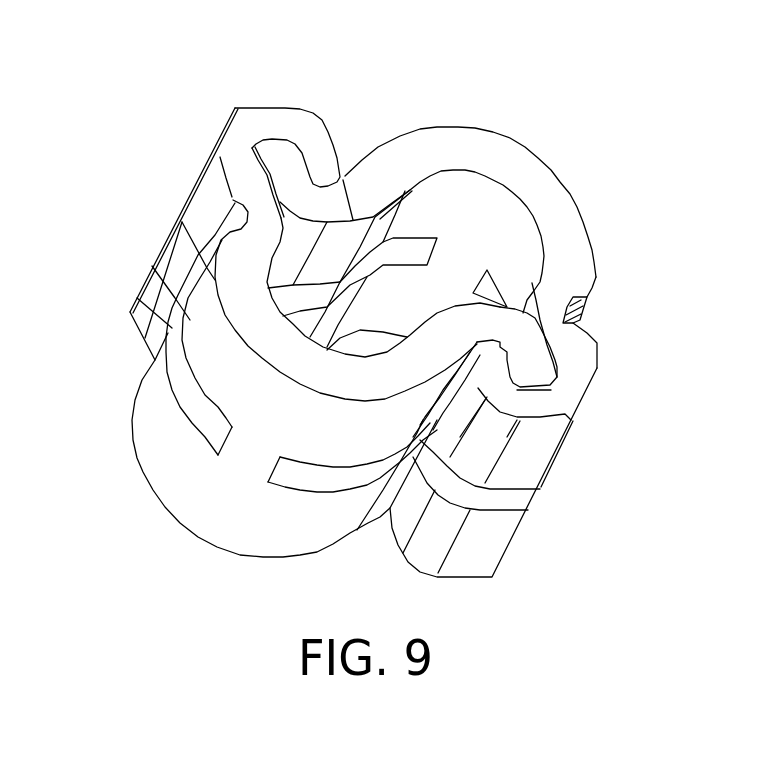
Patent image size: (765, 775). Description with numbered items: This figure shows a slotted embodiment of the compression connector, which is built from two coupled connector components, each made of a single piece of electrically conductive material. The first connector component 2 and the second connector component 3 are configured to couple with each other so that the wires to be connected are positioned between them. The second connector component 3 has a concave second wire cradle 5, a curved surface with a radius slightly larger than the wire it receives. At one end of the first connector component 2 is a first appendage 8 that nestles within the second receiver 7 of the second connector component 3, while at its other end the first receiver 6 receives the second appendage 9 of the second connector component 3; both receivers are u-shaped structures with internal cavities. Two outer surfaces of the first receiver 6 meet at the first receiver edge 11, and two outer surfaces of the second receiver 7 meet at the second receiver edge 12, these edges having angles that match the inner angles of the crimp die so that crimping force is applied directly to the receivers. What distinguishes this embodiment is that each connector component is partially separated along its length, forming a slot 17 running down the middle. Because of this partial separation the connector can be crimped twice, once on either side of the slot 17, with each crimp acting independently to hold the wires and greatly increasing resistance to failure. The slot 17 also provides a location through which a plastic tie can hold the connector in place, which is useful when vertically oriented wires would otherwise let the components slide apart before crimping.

The first connector component 2 is at (316, 401).
The second connector component 3 is at (493, 202).
The second wire cradle 5 is at (412, 230).
The first receiver 6 is at (287, 114).
The second receiver 7 is at (529, 357).
The first appendage 8 is at (560, 348).
The second appendage 9 is at (316, 156).
The first receiver edge 11 is at (184, 192).
The second receiver edge 12 is at (517, 472).
The slot 17 is at (141, 329).